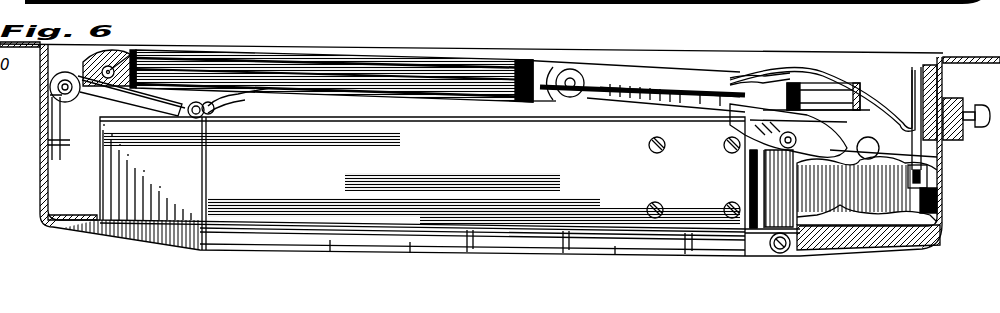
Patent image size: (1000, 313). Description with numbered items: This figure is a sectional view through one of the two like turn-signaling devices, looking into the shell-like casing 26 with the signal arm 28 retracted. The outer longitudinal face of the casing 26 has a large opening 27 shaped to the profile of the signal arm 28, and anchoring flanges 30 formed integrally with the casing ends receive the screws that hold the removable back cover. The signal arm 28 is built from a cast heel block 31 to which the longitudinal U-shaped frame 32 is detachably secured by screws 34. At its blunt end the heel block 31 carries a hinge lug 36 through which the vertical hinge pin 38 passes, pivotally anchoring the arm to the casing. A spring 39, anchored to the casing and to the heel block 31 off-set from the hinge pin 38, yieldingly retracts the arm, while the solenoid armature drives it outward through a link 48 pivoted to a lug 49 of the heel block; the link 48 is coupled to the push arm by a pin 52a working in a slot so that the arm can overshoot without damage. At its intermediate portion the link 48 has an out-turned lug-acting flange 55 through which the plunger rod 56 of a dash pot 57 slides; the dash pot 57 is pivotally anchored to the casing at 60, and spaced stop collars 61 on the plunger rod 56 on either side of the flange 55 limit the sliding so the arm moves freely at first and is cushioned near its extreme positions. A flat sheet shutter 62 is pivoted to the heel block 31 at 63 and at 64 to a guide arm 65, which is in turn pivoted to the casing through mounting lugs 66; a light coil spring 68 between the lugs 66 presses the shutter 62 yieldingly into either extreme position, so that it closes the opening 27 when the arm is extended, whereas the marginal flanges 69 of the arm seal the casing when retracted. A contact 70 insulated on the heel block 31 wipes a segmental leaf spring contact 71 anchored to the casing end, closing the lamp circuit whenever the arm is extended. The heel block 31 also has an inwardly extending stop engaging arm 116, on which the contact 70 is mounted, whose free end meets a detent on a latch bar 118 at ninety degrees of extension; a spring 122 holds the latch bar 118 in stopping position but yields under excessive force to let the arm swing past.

The casing 26 is at (48, 86).
The opening 27 is at (97, 210).
The signal arm 28 is at (166, 0).
The anchoring flange 30 is at (965, 63).
The heel block 31 is at (722, 252).
The U-shaped frame 32 is at (422, 183).
The screws 34 is at (725, 206).
The hinge lug 36 is at (768, 252).
The hinge pin 38 is at (784, 254).
The spring 39 is at (800, 2).
The link 48 is at (648, 72).
The lug 49 is at (900, 147).
The pin 52a is at (577, 67).
The lug-acting flange 55 is at (845, 0).
The plunger rod 56 is at (612, 98).
The dash pot 57 is at (347, 52).
The pivotal anchorage 60 is at (133, 55).
The stop collars 61 is at (855, 2).
The shutter 62 is at (363, 113).
The pivotal connection 63 is at (780, 144).
The pivotal connection 64 is at (178, 118).
The guide arm 65 is at (170, 100).
The mounting lugs 66 is at (50, 104).
The coil spring 68 is at (70, 103).
The marginal flanges 69 is at (86, 230).
The contact 70 is at (940, 183).
The leaf spring contact 71 is at (762, 2).
The stop engaging arm 116 is at (853, 200).
The latch bar 118 is at (700, 2).
The spring 122 is at (830, 28).